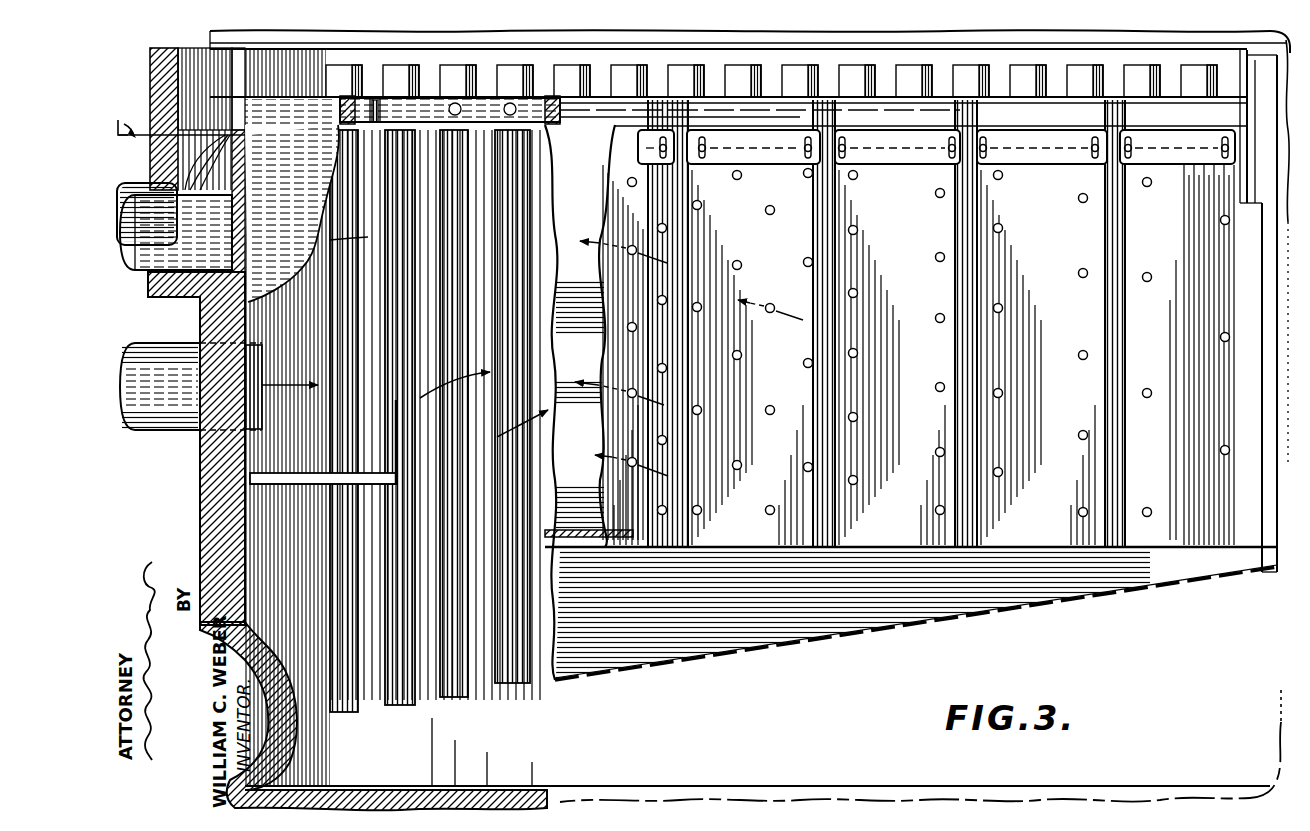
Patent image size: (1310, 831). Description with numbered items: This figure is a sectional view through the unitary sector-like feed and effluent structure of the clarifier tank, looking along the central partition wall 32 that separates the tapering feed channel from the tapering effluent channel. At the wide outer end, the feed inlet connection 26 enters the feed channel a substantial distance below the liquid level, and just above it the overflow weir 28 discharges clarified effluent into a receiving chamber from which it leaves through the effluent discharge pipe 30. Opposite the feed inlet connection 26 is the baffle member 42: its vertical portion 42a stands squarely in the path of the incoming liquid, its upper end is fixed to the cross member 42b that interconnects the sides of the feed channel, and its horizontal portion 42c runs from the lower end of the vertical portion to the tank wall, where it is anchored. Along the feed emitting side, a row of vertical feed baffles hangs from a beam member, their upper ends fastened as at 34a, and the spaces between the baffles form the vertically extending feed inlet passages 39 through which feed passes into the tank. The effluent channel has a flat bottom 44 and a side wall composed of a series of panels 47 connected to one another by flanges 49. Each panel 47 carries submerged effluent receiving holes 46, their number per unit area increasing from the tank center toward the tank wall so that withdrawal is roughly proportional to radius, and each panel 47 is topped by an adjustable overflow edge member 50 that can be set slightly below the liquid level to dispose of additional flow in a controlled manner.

The feed inlet connection 26 is at (162, 430).
The overflow weir 28 is at (243, 206).
The effluent discharge pipe 30 is at (133, 272).
The central partition wall 32 is at (430, 402).
The baffle fastening 34a is at (457, 103).
The feed inlet passages 39 is at (430, 680).
The baffle member 42 is at (392, 486).
The vertical baffle portion 42a is at (332, 240).
The cross member 42b is at (373, 122).
The horizontal baffle portion 42c is at (375, 486).
The flat bottom 44 is at (590, 530).
The effluent receiving holes 46 is at (1147, 284).
The panels 47 is at (1213, 562).
The flanges 49 is at (683, 232).
The adjustable overflow edge member 50 is at (777, 165).